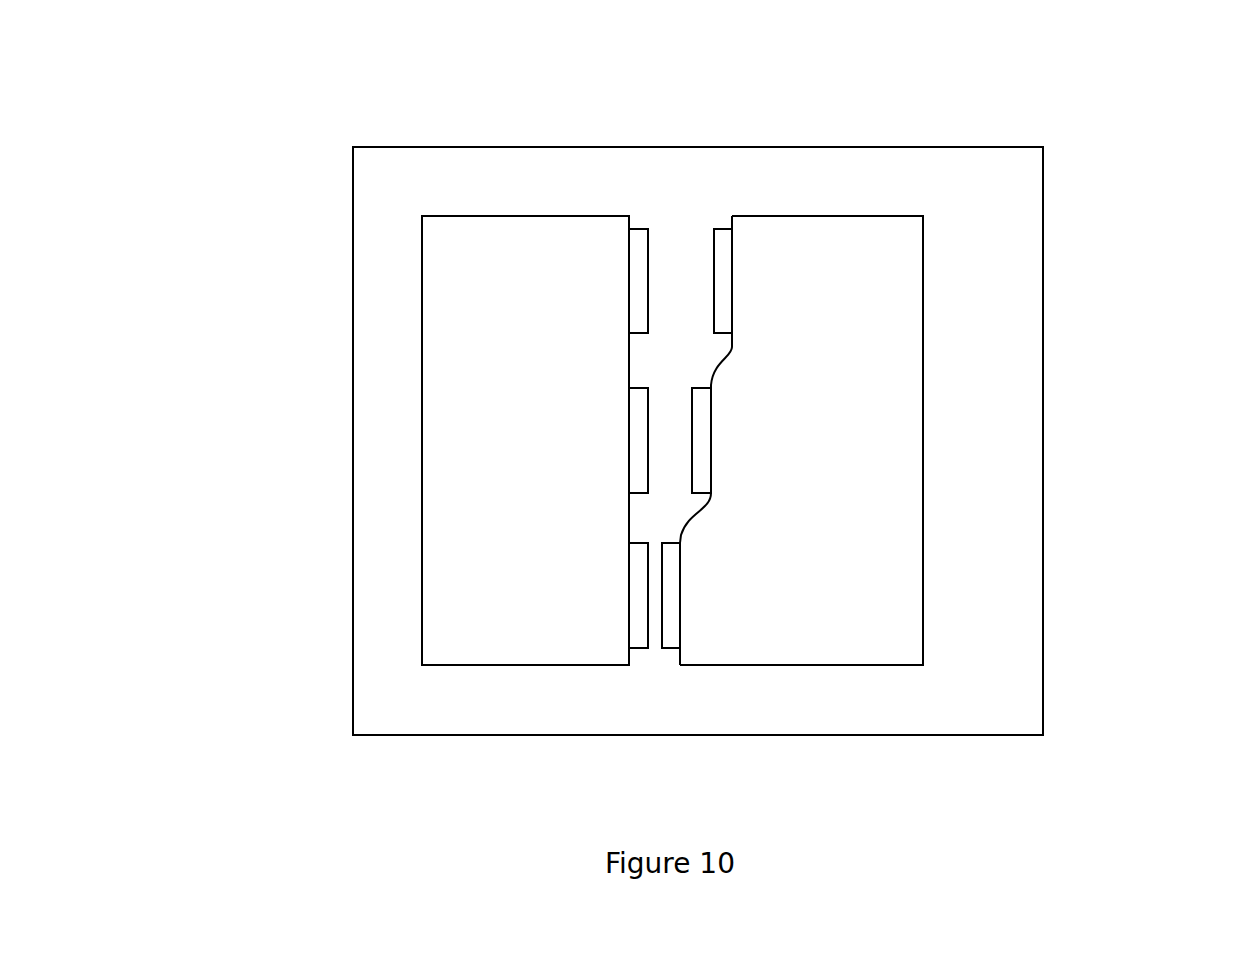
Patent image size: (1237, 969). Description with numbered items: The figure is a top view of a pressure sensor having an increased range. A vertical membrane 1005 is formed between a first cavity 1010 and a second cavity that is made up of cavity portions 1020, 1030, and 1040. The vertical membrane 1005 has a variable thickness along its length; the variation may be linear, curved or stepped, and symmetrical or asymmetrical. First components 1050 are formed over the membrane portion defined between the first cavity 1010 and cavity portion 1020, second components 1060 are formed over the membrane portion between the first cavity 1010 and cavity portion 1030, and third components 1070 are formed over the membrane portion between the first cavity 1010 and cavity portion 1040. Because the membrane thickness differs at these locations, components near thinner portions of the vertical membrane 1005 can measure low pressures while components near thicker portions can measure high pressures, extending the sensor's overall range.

The vertical membrane 1005 is at (680, 260).
The first cavity 1010 is at (475, 303).
The cavity portion 1020 is at (878, 270).
The cavity portion 1030 is at (875, 438).
The cavity portion 1040 is at (882, 615).
The first components 1050 is at (634, 268).
The second components 1060 is at (634, 460).
The third components 1070 is at (634, 632).